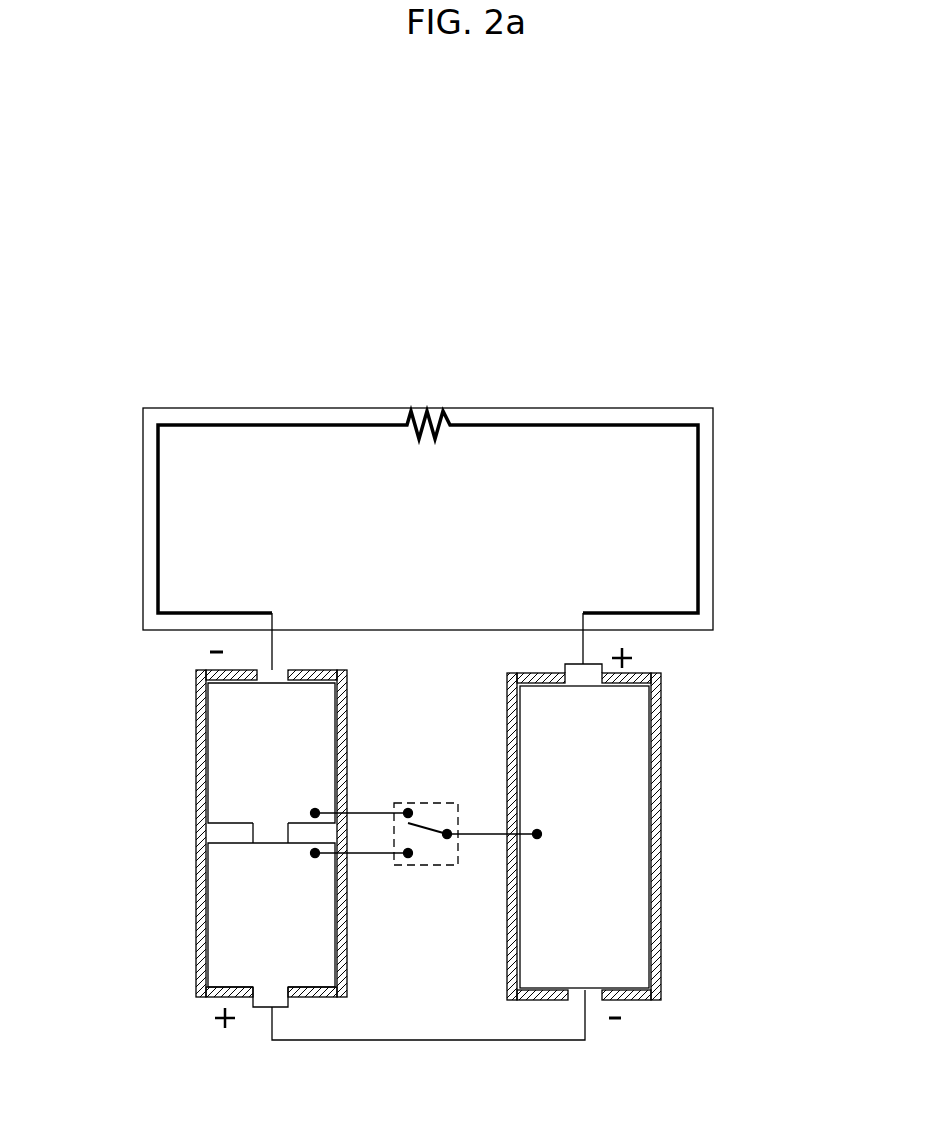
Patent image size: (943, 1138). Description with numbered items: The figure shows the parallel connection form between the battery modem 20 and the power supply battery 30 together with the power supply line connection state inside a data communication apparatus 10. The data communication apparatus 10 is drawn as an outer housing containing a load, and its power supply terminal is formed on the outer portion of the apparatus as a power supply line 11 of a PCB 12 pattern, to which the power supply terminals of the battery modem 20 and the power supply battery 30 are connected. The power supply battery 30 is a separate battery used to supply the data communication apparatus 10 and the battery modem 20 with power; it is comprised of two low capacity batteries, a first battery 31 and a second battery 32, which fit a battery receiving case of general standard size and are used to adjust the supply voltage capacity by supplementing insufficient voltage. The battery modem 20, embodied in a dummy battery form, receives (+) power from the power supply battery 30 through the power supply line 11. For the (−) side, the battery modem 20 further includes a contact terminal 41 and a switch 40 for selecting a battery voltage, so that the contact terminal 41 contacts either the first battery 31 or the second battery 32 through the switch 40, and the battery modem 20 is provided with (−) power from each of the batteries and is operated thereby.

The data communication apparatus 10 is at (720, 516).
The power supply line 11 is at (698, 578).
The PCB 12 is at (182, 632).
The battery modem 20 is at (638, 808).
The power supply battery 30 is at (187, 825).
The first battery 31 is at (213, 756).
The second battery 32 is at (213, 934).
The switch 40 is at (438, 853).
The contact terminal 41 is at (486, 830).